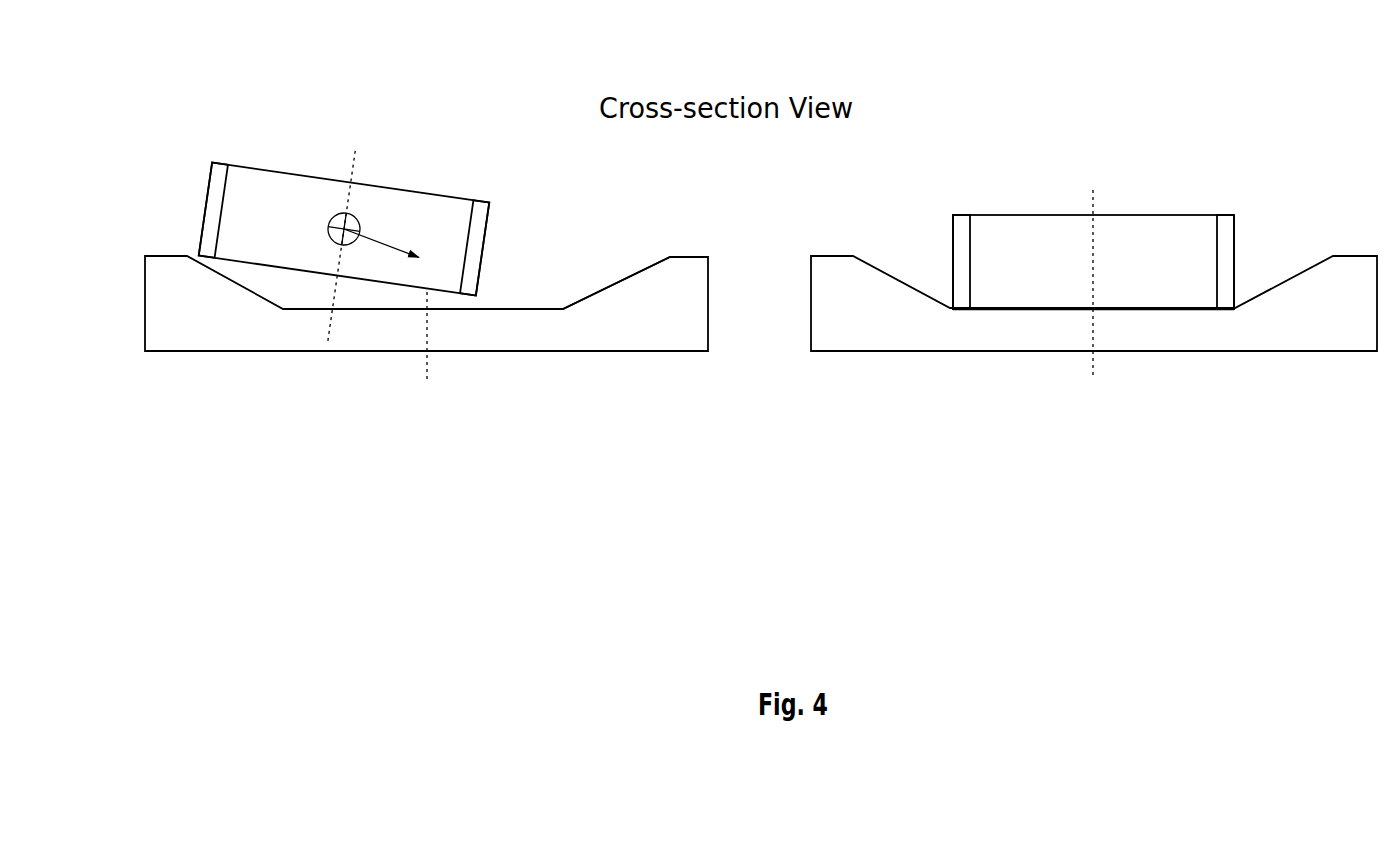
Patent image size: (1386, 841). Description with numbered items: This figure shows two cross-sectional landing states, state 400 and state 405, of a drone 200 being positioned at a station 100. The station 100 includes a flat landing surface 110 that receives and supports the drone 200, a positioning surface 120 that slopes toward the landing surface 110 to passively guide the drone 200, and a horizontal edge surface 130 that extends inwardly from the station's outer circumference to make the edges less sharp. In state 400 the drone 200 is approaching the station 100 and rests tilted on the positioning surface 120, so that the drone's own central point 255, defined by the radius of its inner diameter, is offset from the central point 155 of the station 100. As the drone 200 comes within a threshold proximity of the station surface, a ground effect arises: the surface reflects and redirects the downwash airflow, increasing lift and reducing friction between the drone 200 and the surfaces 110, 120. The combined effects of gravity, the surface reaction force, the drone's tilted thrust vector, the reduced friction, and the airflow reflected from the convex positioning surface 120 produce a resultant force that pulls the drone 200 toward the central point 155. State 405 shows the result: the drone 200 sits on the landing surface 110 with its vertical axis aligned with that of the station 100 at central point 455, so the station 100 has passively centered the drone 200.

The station 100 is at (147, 251).
The landing surface 110 is at (563, 308).
The positioning surface 120 is at (632, 276).
The edge surface 130 is at (698, 257).
The central point 155 is at (427, 366).
The drone 200 is at (203, 172).
The central point 255 is at (353, 171).
The landing state 400 is at (421, 230).
The landing state 405 is at (1094, 232).
The central point 455 is at (1093, 203).